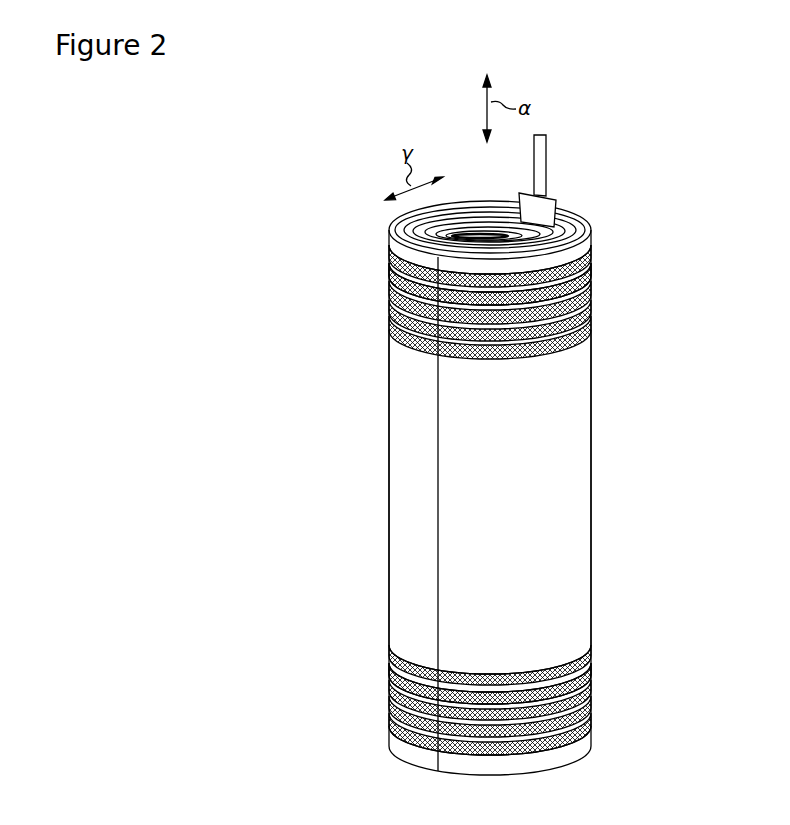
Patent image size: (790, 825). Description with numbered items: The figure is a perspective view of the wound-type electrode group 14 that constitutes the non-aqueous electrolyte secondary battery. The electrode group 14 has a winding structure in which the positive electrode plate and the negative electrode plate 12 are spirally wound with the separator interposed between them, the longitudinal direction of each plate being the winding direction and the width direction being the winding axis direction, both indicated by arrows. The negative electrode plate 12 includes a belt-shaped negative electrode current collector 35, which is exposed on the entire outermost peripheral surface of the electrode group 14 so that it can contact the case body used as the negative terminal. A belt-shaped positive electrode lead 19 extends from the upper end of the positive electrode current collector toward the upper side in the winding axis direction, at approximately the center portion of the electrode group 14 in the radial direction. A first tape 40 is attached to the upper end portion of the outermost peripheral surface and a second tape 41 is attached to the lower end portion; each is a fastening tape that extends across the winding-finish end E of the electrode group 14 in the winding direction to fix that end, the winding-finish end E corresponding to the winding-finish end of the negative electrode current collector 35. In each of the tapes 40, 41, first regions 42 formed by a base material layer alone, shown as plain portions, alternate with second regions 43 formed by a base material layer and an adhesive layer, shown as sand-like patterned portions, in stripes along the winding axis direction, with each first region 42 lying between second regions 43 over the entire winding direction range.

The electrode group 14 is at (606, 385).
The negative electrode plate 12 is at (586, 492).
The negative electrode current collector 35 is at (586, 563).
The winding-finish end E is at (438, 487).
The positive electrode lead 19 is at (548, 160).
The first tape 40 is at (597, 271).
The second tape 41 is at (592, 670).
The first region 42 is at (518, 288).
The second region 43 is at (588, 229).